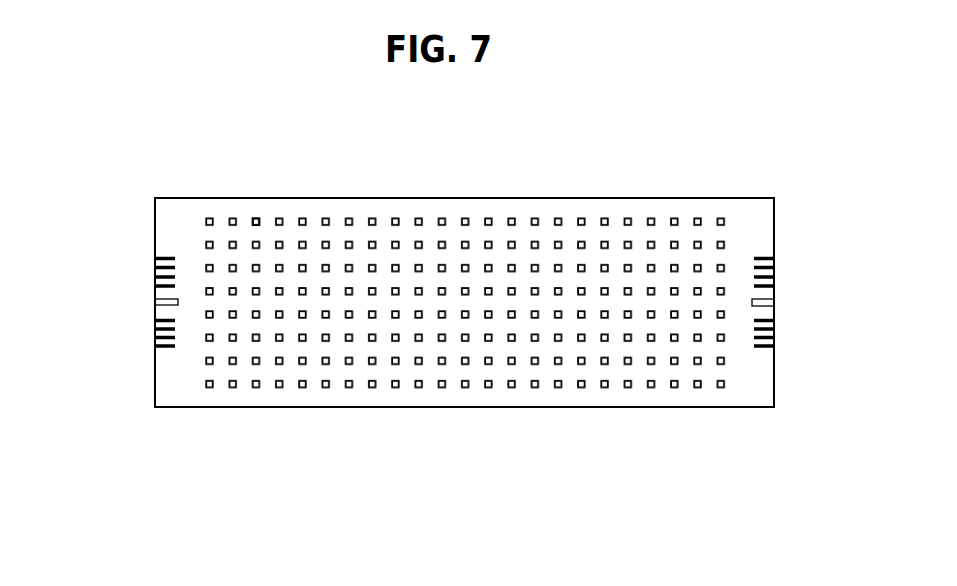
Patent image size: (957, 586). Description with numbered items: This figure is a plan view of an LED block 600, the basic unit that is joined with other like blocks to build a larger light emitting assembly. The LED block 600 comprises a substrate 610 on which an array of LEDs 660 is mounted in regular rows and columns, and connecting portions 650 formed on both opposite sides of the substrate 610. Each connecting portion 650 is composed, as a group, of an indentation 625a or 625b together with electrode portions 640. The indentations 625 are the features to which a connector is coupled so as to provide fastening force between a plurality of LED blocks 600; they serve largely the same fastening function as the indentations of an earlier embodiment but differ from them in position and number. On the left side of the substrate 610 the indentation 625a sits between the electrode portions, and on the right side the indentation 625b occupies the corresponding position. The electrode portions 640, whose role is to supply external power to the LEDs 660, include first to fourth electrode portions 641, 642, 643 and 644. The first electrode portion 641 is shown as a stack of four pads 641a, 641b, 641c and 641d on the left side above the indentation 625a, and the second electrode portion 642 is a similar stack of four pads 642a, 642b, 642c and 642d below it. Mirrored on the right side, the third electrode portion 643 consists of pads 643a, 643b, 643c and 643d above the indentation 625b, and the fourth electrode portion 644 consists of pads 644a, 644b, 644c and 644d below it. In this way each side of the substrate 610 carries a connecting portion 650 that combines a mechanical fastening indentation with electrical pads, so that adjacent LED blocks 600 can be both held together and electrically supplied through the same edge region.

The LED block 600 is at (464, 255).
The substrate 610 is at (543, 210).
The LED 660 is at (255, 220).
The connecting portion 650 is at (463, 380).
The electrode portion 640 is at (463, 364).
The first electrode portion 641 is at (101, 250).
The first electrode portion 641a is at (155, 258).
The first electrode portion 641b is at (155, 268).
The first electrode portion 641c is at (155, 277).
The first electrode portion 641d is at (155, 286).
The second electrode portion 642 is at (101, 342).
The second electrode portion 642a is at (155, 320).
The second electrode portion 642b is at (155, 329).
The second electrode portion 642c is at (155, 338).
The second electrode portion 642d is at (155, 346).
The third electrode portion 643 is at (826, 250).
The third electrode portion 643a is at (774, 258).
The third electrode portion 643b is at (774, 268).
The third electrode portion 643c is at (774, 277).
The third electrode portion 643d is at (774, 286).
The fourth electrode portion 644 is at (826, 344).
The fourth electrode portion 644a is at (774, 320).
The fourth electrode portion 644b is at (774, 329).
The fourth electrode portion 644c is at (774, 338).
The fourth electrode portion 644d is at (774, 346).
The indentation 625 is at (468, 425).
The indentation 625a is at (178, 303).
The indentation 625b is at (758, 307).